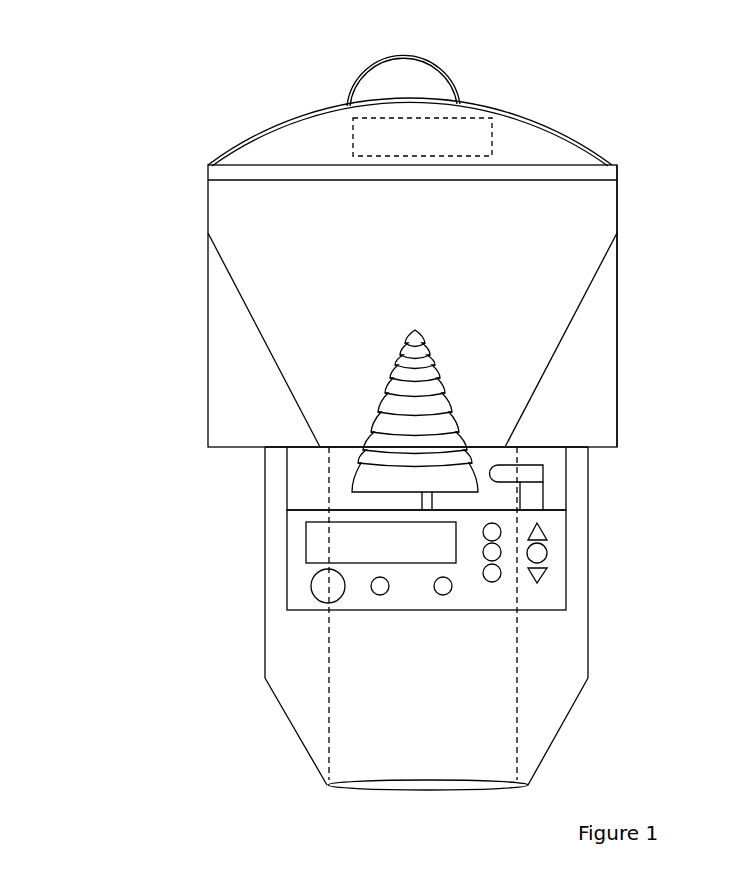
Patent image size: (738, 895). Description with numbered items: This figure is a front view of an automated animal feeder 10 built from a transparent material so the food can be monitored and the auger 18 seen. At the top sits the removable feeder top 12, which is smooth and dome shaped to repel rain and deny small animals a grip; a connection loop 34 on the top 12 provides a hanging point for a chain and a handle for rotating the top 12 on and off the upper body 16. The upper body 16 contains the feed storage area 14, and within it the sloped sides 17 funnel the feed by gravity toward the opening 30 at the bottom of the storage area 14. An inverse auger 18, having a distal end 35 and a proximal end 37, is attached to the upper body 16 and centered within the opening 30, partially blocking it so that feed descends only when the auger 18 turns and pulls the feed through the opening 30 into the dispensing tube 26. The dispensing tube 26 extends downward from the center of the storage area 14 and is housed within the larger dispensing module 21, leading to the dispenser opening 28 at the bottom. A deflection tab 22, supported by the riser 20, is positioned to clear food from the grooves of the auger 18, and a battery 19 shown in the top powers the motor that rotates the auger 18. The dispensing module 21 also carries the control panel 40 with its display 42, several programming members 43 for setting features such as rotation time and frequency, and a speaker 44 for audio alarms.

The feeder 10 is at (112, 252).
The feeder top 12 is at (279, 134).
The feed storage area 14 is at (412, 306).
The upper body 16 is at (617, 333).
The sloped sides 17 is at (257, 322).
The auger 18 is at (372, 450).
The battery 19 is at (490, 128).
The riser 20 is at (537, 489).
The dispensing module 21 is at (578, 647).
The deflection tab 22 is at (522, 472).
The dispensing tube 26 is at (363, 755).
The dispenser opening 28 is at (427, 790).
The opening 30 is at (345, 447).
The connection loop 34 is at (451, 73).
The auger distal end 35 is at (365, 468).
The auger proximal end 37 is at (418, 342).
The control panel 40 is at (297, 560).
The display 42 is at (381, 542).
The programming members 43 is at (537, 583).
The speaker 44 is at (323, 597).